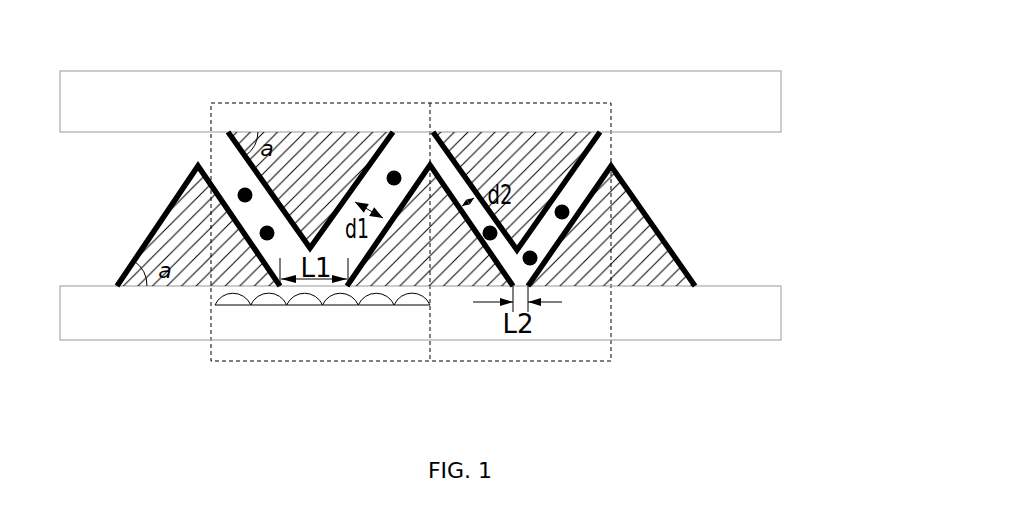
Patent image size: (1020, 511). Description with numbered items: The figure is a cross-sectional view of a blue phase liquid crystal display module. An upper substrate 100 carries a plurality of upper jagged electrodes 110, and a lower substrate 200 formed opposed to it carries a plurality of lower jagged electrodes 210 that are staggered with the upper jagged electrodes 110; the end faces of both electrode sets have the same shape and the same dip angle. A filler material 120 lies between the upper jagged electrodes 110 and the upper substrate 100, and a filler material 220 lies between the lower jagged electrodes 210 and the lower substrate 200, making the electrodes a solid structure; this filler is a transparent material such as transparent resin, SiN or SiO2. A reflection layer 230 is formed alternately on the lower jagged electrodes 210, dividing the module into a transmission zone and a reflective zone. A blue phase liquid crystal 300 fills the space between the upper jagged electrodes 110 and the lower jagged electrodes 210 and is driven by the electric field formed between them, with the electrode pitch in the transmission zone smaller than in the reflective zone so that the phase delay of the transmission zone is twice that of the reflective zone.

The upper substrate 100 is at (430, 127).
The upper jagged electrodes 110 is at (598, 134).
The filler material 120 is at (323, 167).
The lower substrate 200 is at (427, 294).
The lower jagged electrodes 210 is at (145, 240).
The filler material 220 is at (190, 287).
The reflection layer 230 is at (343, 307).
The blue phase liquid crystal 300 is at (238, 190).